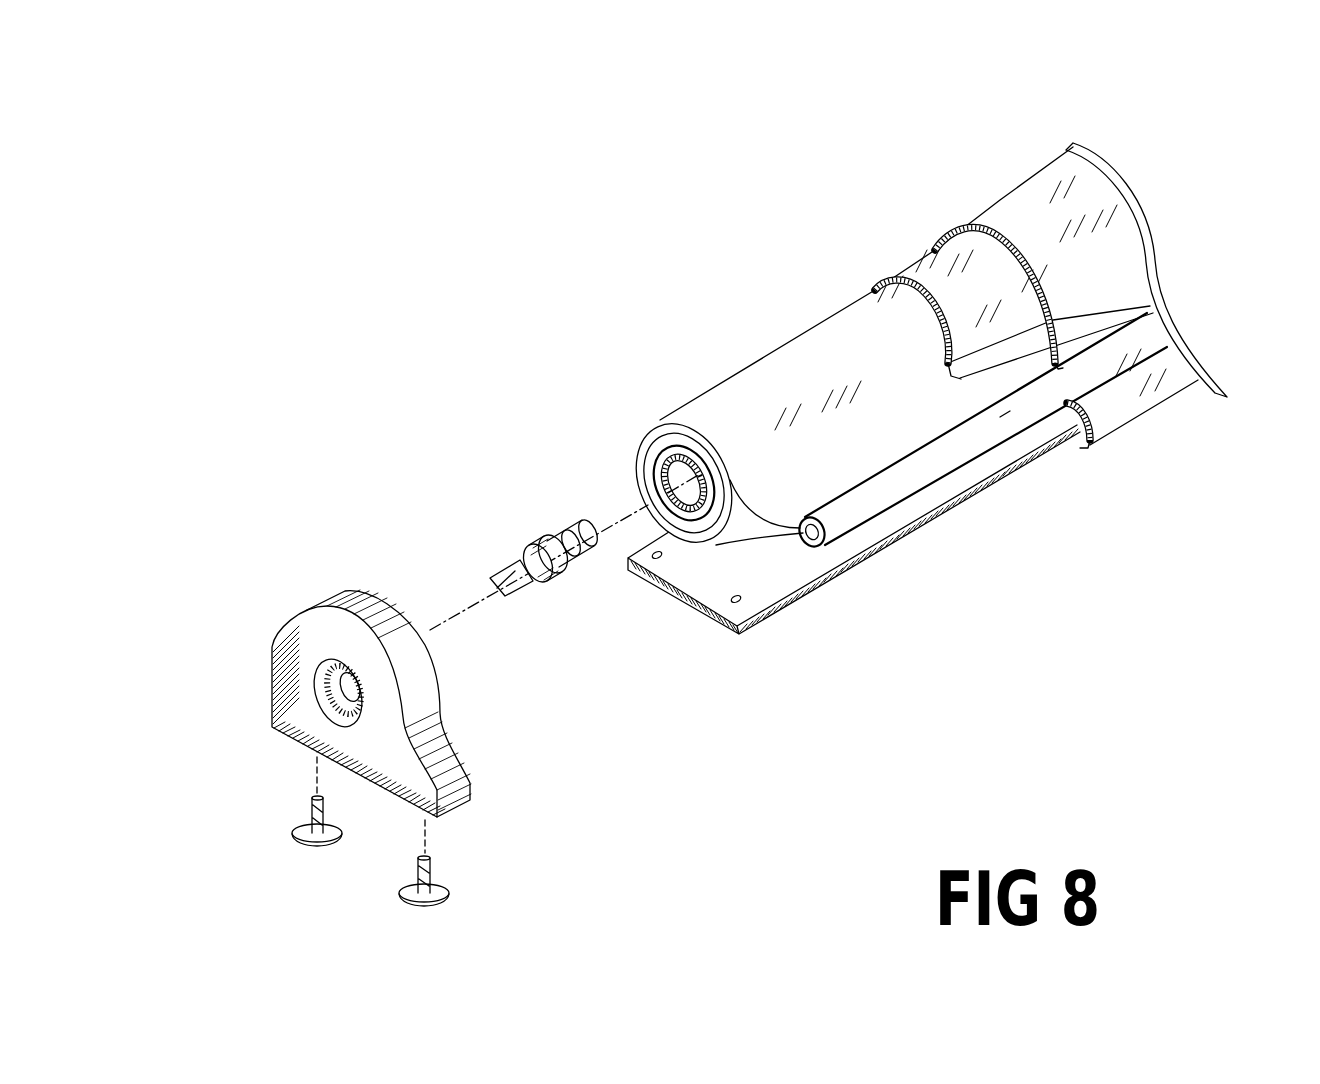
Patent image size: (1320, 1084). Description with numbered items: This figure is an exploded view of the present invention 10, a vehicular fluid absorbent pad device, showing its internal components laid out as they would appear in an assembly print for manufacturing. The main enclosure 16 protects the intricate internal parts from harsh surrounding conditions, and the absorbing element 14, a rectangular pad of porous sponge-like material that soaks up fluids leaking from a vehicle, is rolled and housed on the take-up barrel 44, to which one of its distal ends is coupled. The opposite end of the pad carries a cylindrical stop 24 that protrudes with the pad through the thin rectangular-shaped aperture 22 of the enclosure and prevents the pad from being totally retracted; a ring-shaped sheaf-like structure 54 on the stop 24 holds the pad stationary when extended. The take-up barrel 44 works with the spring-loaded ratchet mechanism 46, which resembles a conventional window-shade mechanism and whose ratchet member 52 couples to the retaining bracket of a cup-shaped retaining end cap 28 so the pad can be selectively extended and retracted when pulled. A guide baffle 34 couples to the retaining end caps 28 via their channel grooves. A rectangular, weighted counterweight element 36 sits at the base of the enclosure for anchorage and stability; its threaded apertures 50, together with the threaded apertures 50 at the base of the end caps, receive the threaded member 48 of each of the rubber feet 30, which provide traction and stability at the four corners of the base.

The present invention 10 is at (487, 374).
The absorbing element 14 is at (833, 330).
The main enclosure 16 is at (1113, 210).
The rectangular-shaped aperture 22 is at (1148, 297).
The stop 24 is at (1005, 415).
The retaining end cap 28 is at (342, 612).
The rubber feet 30 is at (447, 897).
The guide baffle 34 is at (942, 278).
The counterweight element 36 is at (810, 560).
The take-up barrel 44 is at (733, 523).
The spring-loaded ratchet mechanism 46 is at (563, 532).
The threaded member 48 is at (303, 823).
The threaded aperture 50 is at (740, 605).
The ratchet member 52 is at (505, 565).
The ring-shaped sheaf-like structure 54 is at (880, 495).